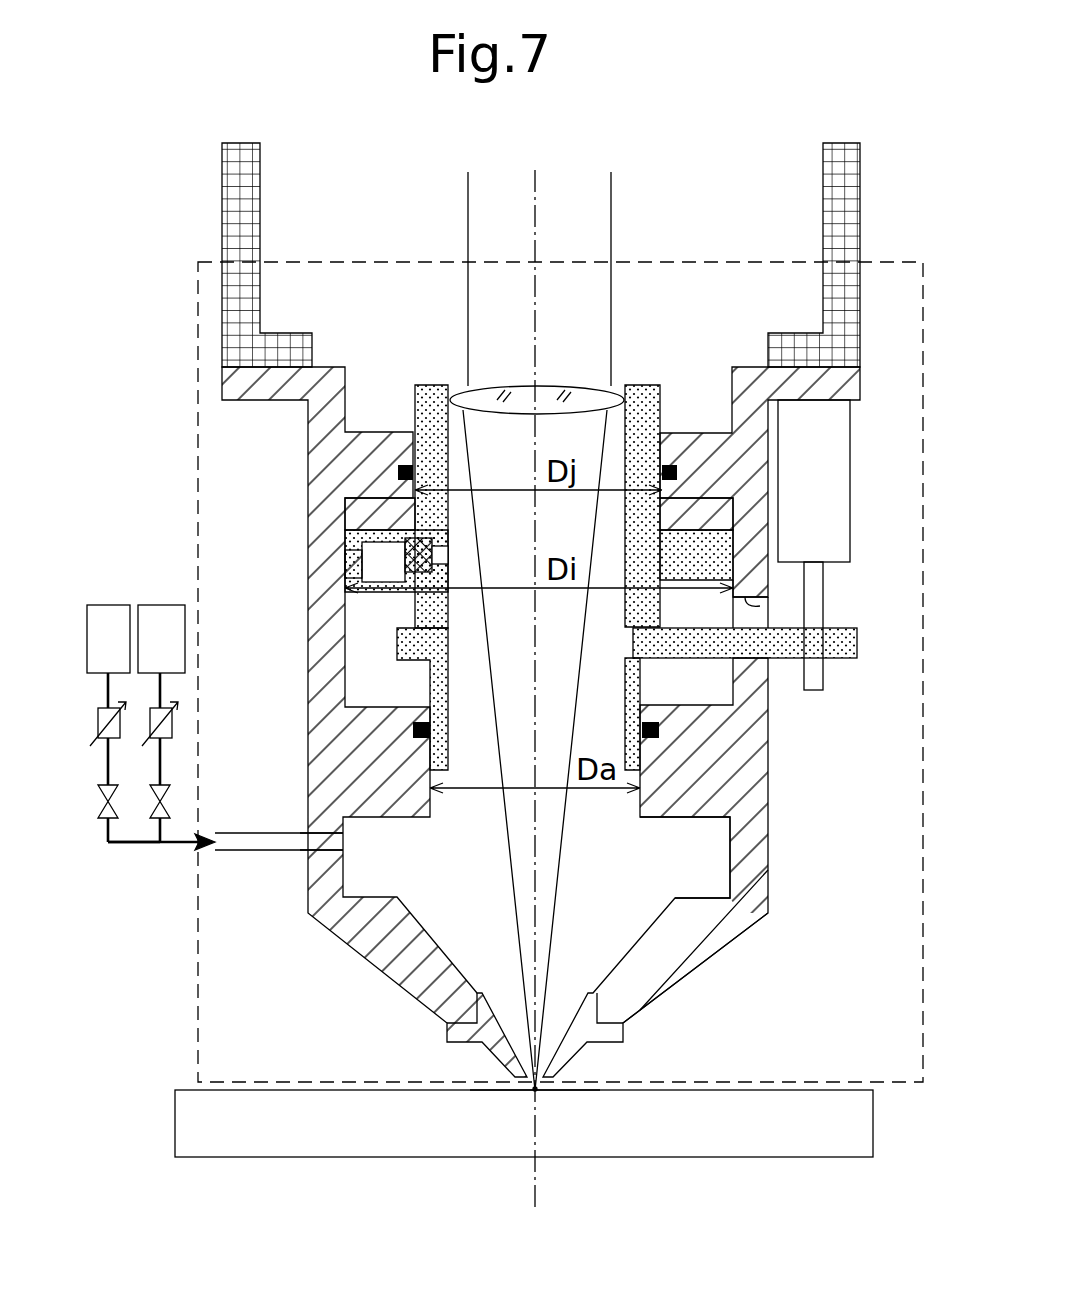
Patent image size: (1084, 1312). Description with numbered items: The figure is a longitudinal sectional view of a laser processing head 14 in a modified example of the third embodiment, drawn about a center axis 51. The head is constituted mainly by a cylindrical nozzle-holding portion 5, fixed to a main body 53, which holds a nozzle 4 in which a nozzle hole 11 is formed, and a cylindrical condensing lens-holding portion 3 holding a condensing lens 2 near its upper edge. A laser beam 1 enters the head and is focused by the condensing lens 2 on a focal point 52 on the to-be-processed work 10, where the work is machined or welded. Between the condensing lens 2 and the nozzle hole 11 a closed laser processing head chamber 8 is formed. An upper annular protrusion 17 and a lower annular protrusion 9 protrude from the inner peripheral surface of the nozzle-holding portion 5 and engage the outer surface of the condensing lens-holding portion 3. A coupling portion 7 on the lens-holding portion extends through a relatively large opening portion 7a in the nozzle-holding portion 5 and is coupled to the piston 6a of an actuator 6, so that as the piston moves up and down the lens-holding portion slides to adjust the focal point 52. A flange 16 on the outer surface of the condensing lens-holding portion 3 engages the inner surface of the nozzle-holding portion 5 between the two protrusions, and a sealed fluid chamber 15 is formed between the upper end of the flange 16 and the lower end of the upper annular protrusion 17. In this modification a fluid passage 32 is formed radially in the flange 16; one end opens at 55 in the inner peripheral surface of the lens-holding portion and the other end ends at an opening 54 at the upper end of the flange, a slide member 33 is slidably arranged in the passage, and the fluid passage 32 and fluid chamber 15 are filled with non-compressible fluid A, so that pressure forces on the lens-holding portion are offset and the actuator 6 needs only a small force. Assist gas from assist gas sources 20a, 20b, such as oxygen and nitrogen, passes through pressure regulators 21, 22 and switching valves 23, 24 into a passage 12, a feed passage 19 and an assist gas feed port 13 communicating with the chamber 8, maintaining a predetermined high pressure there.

The laser beam 1 is at (612, 205).
The condensing lens 2 is at (568, 398).
The condensing lens-holding portion 3 is at (640, 388).
The nozzle 4 is at (600, 1040).
The nozzle-holding portion 5 is at (750, 940).
The actuator 6 is at (835, 426).
The piston 6a is at (815, 603).
The coupling portion 7 is at (848, 642).
The opening portion 7a is at (765, 603).
The laser processing head chamber 8 is at (703, 886).
The lower annular protrusion 9 is at (385, 725).
The to-be-processed work 10 is at (697, 1140).
The nozzle hole 11 is at (527, 1092).
The passage 12 is at (161, 859).
The assist gas feed port 13 is at (300, 850).
The laser processing head 14 is at (560, 672).
The fluid chamber 15 is at (357, 518).
The flange 16 is at (690, 545).
The upper annular protrusion 17 is at (372, 490).
The feed passage 19 is at (232, 852).
The assist gas source 20a is at (108, 605).
The assist gas source 20b is at (160, 605).
The pressure regulator 21 is at (98, 718).
The pressure regulator 22 is at (150, 718).
The switching valve 23 is at (100, 797).
The switching valve 24 is at (152, 797).
The fluid passage 32 is at (345, 573).
The slide member 33 is at (348, 537).
The optical axis 51 is at (545, 190).
The focal point 52 is at (540, 1092).
The main body 53 is at (845, 217).
The opening 54 is at (357, 500).
The opening of fluid passage 55 is at (440, 556).
The non-compressible fluid A is at (345, 567).